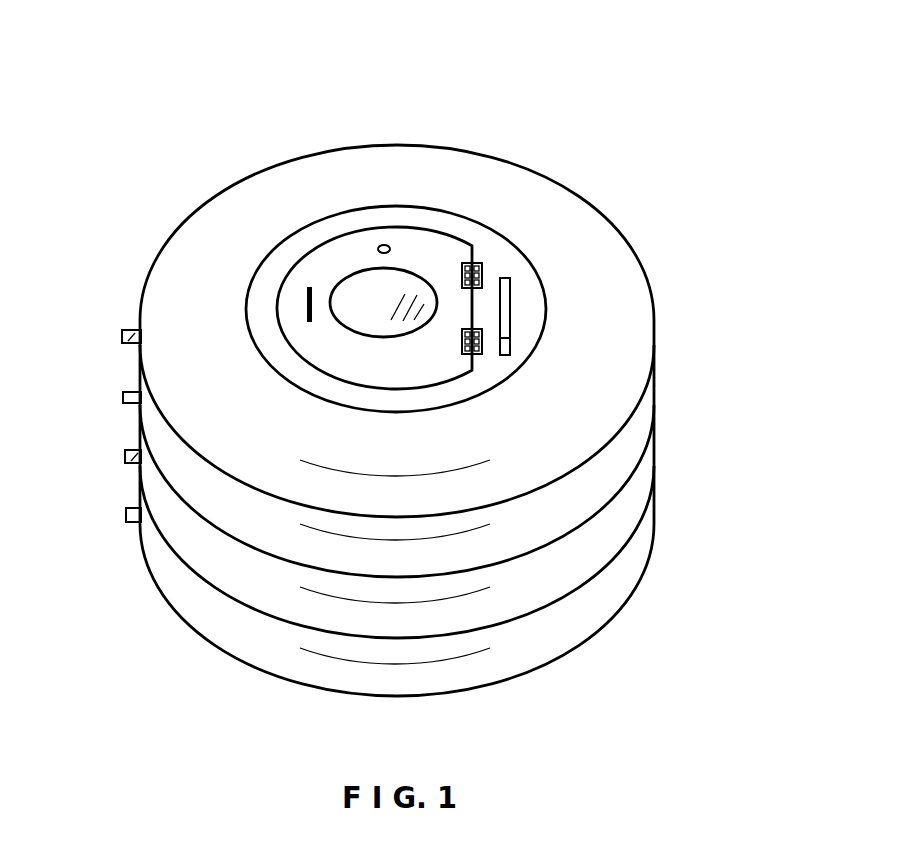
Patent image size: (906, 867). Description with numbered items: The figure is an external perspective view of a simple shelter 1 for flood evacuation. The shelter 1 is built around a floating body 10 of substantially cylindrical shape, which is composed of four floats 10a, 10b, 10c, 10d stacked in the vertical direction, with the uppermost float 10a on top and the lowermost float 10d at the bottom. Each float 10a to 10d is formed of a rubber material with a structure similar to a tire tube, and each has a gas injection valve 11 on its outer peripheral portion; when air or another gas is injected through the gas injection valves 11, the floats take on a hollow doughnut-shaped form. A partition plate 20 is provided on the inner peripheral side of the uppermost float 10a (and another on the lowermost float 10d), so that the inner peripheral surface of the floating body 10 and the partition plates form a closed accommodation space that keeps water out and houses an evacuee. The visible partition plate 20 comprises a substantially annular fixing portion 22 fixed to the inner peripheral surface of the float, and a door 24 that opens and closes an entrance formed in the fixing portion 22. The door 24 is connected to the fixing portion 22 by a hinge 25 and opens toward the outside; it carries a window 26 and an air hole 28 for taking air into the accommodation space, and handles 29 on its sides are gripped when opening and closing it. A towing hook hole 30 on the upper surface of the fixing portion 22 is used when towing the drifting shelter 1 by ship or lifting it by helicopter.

The shelter 1 is at (624, 96).
The floating body 10 is at (643, 242).
The uppermost float 10a is at (642, 322).
The float 10b is at (642, 410).
The float 10c is at (642, 470).
The lowermost float 10d is at (642, 537).
The gas injection valve 11 is at (122, 342).
The partition plate 20 is at (529, 289).
The fixing portion 22 is at (283, 257).
The door 24 is at (337, 348).
The hinge 25 is at (480, 262).
The window 26 is at (397, 283).
The air hole 28 is at (389, 245).
The handle 29 is at (306, 304).
The towing hook hole 30 is at (506, 323).